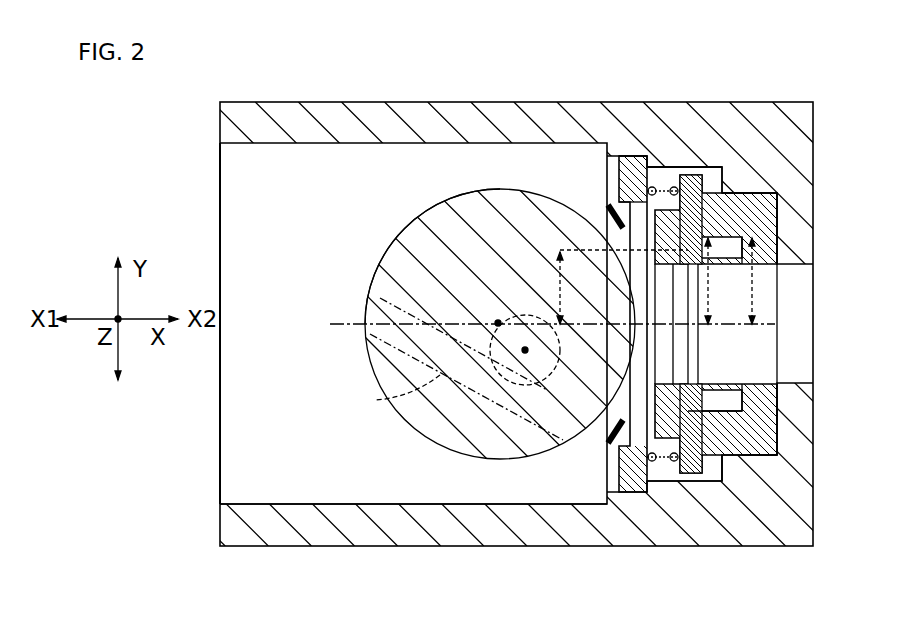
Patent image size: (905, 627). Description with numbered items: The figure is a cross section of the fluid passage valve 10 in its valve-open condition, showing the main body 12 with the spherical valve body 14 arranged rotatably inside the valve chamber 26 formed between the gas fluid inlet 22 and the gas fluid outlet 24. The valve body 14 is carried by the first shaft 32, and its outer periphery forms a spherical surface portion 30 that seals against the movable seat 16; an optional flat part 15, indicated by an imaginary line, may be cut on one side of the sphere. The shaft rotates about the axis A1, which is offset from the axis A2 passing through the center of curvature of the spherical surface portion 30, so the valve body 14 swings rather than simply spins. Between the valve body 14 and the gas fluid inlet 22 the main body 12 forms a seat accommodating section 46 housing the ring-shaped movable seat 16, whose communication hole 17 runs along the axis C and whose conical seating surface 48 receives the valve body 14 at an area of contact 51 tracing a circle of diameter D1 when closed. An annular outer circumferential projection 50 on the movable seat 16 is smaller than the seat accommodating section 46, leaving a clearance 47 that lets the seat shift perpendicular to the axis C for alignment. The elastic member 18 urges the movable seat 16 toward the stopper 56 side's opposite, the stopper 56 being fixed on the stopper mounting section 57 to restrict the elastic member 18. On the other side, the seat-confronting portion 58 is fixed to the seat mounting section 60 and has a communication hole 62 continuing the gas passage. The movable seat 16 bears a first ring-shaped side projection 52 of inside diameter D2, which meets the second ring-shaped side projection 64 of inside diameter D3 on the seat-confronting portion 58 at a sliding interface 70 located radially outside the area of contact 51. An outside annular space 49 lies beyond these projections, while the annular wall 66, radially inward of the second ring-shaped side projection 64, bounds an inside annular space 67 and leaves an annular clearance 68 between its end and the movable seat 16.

The fluid passage valve 10 is at (796, 95).
The main body 12 is at (626, 103).
The valve body 14 is at (403, 229).
The flat part 15 is at (413, 398).
The movable seat 16 is at (713, 186).
The communication hole 17 is at (672, 358).
The elastic member 18 is at (676, 462).
The gas fluid inlet 22 is at (797, 266).
The gas fluid outlet 24 is at (220, 190).
The valve chamber 26 is at (501, 490).
The spherical surface portion 30 is at (516, 189).
The first shaft 32 is at (478, 456).
The seat accommodating section 46 is at (716, 178).
The clearance 47 is at (691, 175).
The seating surface 48 is at (647, 378).
The outside annular space 49 is at (738, 190).
The annular outer circumferential projection 50 is at (690, 168).
The area of contact 51 is at (631, 294).
The first ring-shaped side projection 52 is at (782, 205).
The stopper 56 is at (619, 190).
The stopper mounting section 57 is at (619, 158).
The seat-confronting portion 58 is at (779, 408).
The seat mounting section 60 is at (778, 446).
The communication hole 62 is at (766, 383).
The second ring-shaped side projection 64 is at (724, 452).
The annular wall 66 is at (736, 387).
The inside annular space 67 is at (694, 473).
The annular clearance 68 is at (718, 408).
The sliding interface 70 is at (777, 226).
The axis of the movable seat C is at (334, 324).
The axis A1 is at (541, 360).
The axis A2 is at (488, 310).
The diameter of the contact circle D1 is at (609, 287).
The inside diameter of the first ring-shaped side projection D2 is at (726, 281).
The inside diameter of the second ring-shaped side projection D3 is at (769, 281).